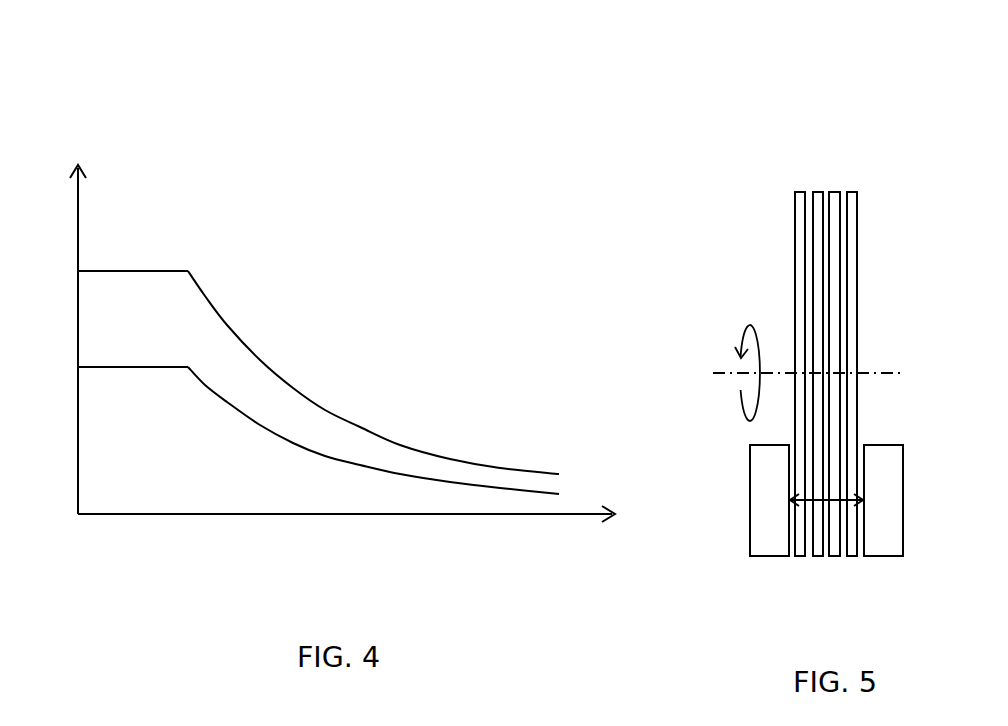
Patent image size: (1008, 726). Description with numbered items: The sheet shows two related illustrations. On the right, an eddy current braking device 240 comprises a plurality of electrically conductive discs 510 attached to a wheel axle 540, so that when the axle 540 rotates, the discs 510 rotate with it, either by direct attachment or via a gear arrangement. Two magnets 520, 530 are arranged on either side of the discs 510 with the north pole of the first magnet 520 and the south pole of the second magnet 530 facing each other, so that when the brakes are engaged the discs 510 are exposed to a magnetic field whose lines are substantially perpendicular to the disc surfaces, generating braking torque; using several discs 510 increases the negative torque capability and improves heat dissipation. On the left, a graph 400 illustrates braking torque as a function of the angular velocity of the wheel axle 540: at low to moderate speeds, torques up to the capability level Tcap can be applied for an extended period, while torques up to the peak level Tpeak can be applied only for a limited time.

In FIG. 4, the graph 400 is at (440, 190).
In FIG. 5, the eddy current braking device 240 is at (722, 94).
In FIG. 5, the electrically conductive disc 510 is at (865, 183).
In FIG. 5, the magnet 520 is at (765, 556).
In FIG. 5, the magnet 530 is at (882, 556).
In FIG. 5, the wheel axle 540 is at (815, 359).